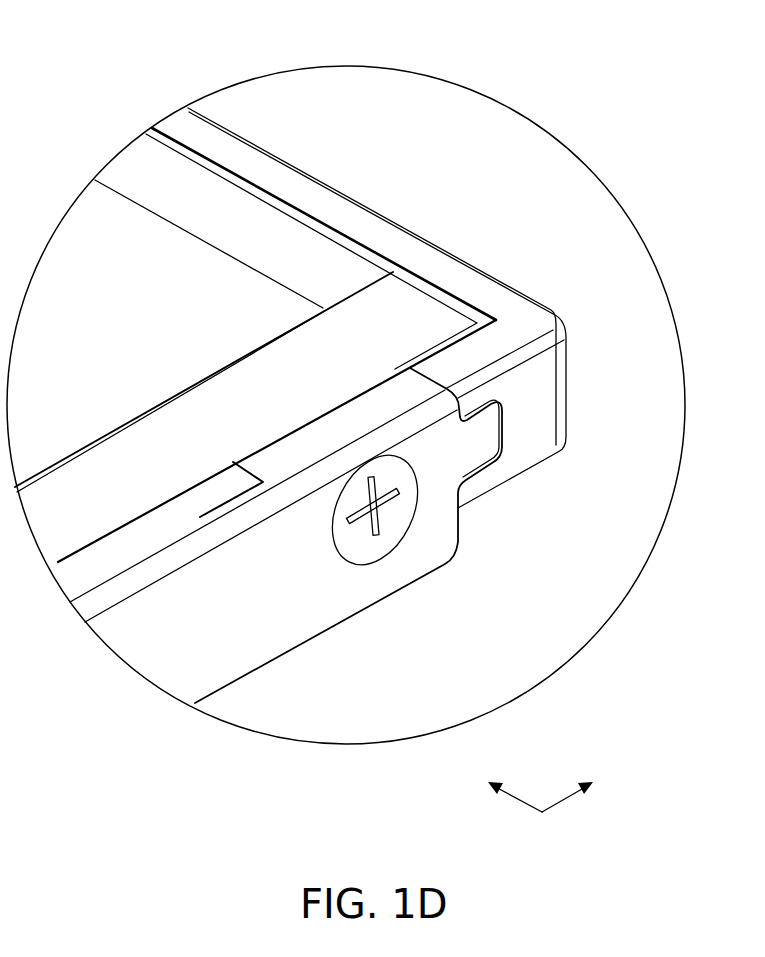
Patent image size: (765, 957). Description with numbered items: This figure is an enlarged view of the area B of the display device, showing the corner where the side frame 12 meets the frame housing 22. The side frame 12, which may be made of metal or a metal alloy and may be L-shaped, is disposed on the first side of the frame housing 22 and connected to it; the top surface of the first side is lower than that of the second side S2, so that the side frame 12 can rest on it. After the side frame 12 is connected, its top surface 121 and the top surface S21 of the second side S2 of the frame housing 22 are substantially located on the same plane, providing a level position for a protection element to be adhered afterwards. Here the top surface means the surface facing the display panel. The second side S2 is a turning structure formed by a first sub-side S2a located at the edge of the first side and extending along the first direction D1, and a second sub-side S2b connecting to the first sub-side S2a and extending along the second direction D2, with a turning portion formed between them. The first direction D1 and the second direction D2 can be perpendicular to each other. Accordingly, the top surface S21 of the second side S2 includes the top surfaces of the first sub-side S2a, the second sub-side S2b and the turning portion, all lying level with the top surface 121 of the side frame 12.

The area B is at (450, 83).
The frame housing 22 is at (336, 191).
The top surface of second side S21 is at (460, 280).
The second side S2 is at (539, 393).
The first sub-side S2a is at (523, 397).
The second sub-side S2b is at (522, 292).
The top surface of side frame 121 is at (372, 410).
The side frame 12 is at (374, 601).
The first direction D1 is at (587, 786).
The second direction D2 is at (498, 786).